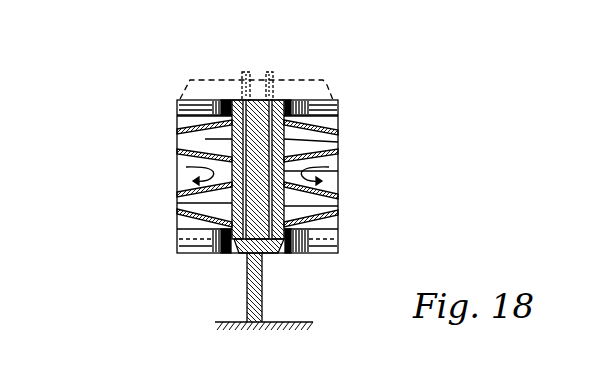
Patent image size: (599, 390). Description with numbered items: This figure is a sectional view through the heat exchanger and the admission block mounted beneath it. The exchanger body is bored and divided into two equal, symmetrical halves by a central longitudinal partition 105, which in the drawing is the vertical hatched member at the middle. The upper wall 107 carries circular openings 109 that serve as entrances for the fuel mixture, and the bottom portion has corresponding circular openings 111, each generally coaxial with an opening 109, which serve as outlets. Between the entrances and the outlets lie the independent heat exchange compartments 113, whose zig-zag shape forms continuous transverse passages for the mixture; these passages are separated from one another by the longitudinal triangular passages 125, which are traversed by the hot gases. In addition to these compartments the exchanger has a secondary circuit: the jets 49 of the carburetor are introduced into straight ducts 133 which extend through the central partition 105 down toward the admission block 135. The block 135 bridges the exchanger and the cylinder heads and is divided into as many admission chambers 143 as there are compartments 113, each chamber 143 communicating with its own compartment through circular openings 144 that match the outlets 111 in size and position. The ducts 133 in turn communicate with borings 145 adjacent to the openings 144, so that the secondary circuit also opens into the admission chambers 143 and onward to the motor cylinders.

The jet 49 is at (270, 72).
The longitudinal partition 105 is at (276, 100).
The upper wall 107 is at (236, 100).
The circular opening 109 is at (328, 112).
The circular opening 111 is at (180, 228).
The heat exchange compartment 113 is at (341, 118).
The longitudinal triangular passage 125 is at (338, 134).
The straight duct 133 is at (242, 141).
The admission block 135 is at (254, 323).
The admission chamber 143 is at (217, 297).
The circular opening 144 is at (183, 245).
The boring 145 is at (241, 253).